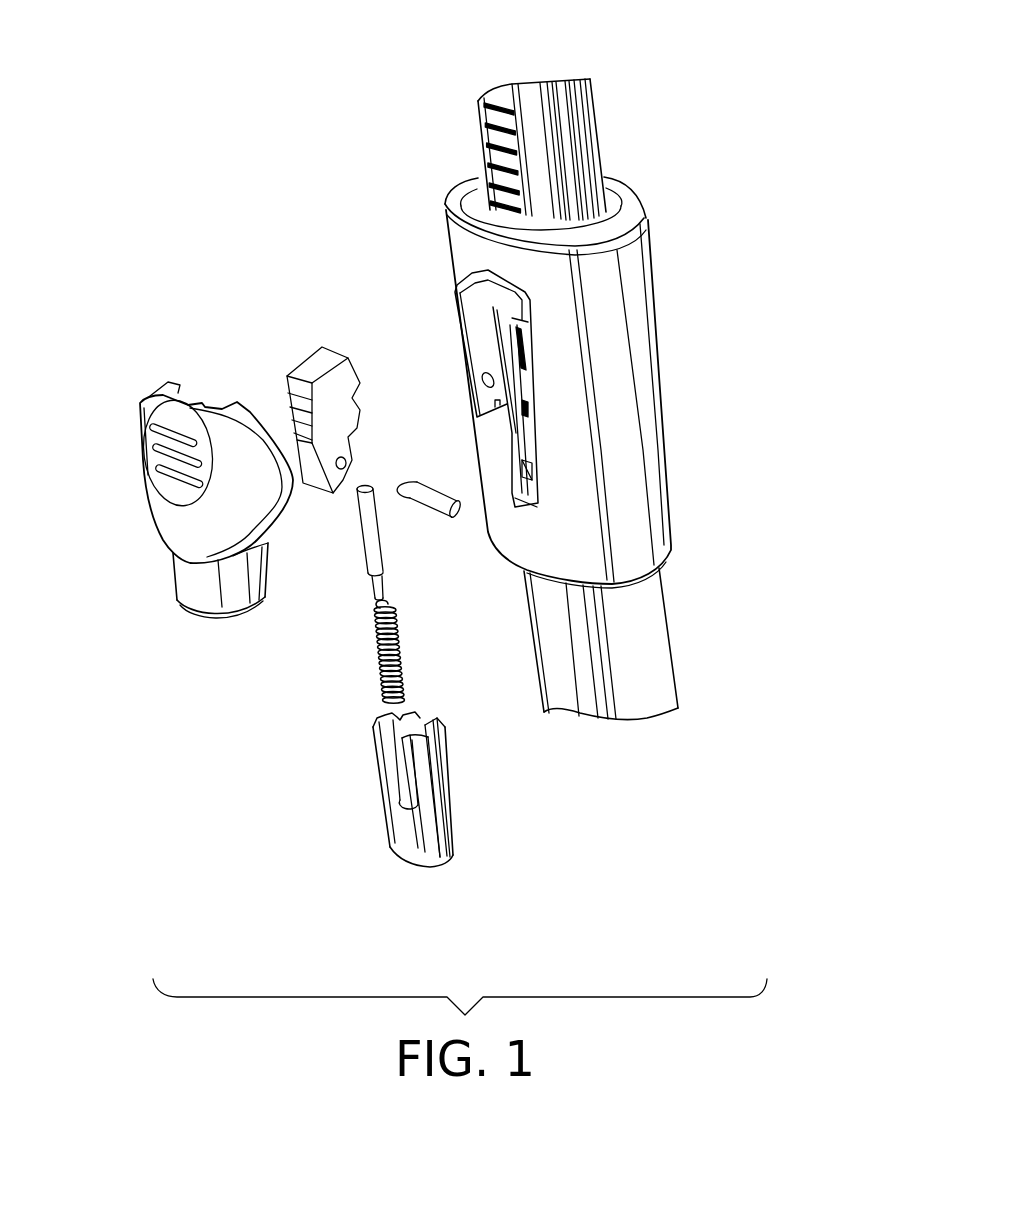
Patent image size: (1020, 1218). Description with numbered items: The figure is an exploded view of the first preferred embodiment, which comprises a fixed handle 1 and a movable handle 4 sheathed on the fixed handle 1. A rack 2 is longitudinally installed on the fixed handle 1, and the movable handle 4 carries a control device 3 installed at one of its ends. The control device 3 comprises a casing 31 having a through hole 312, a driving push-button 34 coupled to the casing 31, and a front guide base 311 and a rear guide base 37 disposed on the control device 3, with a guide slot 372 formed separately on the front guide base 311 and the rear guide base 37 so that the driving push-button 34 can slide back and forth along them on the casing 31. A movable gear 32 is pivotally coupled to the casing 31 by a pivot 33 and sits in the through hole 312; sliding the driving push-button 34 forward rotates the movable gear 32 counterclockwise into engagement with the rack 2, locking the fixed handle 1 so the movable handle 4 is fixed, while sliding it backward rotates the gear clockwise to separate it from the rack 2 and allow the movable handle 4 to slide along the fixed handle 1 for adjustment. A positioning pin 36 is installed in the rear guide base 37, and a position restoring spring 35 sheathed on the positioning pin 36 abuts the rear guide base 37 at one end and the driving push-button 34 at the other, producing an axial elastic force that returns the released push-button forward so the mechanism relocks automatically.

The fixed handle 1 is at (534, 112).
The rack 2 is at (423, 113).
The control device 3 is at (454, 532).
The casing 31 is at (650, 409).
The movable gear 32 is at (239, 379).
The pivot 33 is at (444, 582).
The driving push-button 34 is at (172, 516).
The position restoring spring 35 is at (301, 702).
The positioning pin 36 is at (290, 598).
The rear guide base 37 is at (546, 649).
The front guide base 311 is at (683, 414).
The through hole 312 is at (685, 550).
The guide slot 372 is at (629, 632).
The movable handle 4 is at (681, 688).